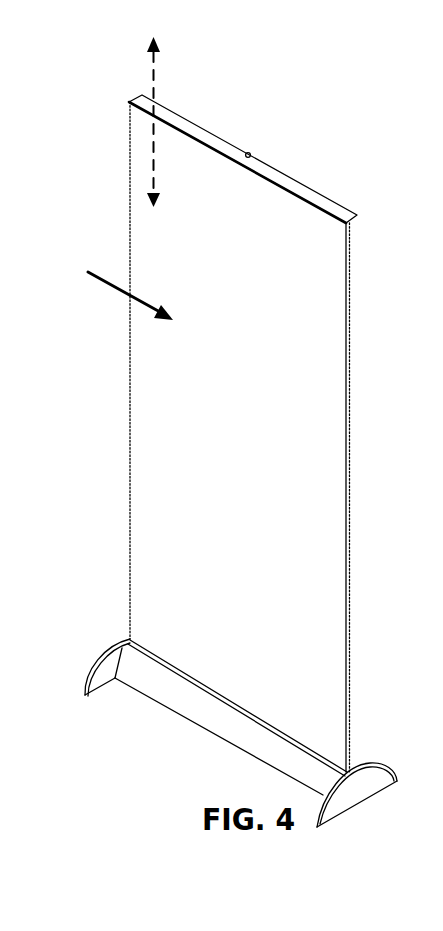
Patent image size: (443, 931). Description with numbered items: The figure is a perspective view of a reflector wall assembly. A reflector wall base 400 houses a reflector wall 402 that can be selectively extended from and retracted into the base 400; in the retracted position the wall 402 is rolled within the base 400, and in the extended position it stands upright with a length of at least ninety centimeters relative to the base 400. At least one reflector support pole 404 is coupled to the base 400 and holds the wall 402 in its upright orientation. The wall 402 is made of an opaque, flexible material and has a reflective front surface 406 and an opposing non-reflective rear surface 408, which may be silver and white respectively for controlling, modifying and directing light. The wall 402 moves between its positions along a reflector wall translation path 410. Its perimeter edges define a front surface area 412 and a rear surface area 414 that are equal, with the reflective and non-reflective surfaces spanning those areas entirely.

The reflector wall base 400 is at (110, 670).
The reflector wall 402 is at (153, 412).
The reflector support pole 404 is at (249, 152).
The reflective front surface 406 is at (109, 290).
The non-reflective rear surface 408 is at (350, 380).
The reflector wall translation path 410 is at (150, 145).
The front surface area 412 is at (241, 410).
The rear surface area 414 is at (350, 313).